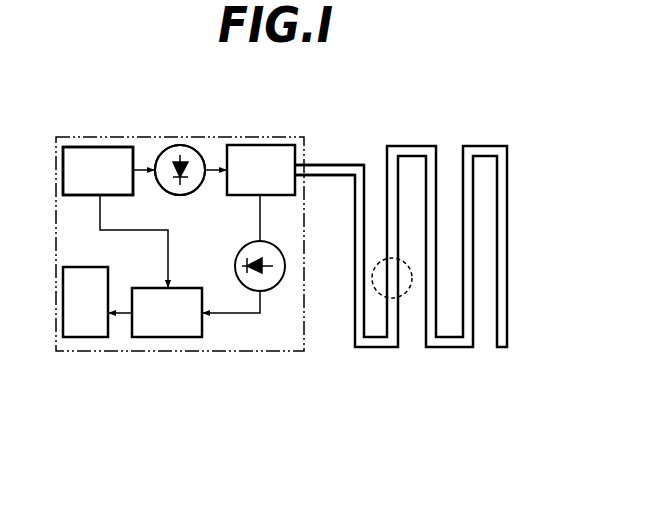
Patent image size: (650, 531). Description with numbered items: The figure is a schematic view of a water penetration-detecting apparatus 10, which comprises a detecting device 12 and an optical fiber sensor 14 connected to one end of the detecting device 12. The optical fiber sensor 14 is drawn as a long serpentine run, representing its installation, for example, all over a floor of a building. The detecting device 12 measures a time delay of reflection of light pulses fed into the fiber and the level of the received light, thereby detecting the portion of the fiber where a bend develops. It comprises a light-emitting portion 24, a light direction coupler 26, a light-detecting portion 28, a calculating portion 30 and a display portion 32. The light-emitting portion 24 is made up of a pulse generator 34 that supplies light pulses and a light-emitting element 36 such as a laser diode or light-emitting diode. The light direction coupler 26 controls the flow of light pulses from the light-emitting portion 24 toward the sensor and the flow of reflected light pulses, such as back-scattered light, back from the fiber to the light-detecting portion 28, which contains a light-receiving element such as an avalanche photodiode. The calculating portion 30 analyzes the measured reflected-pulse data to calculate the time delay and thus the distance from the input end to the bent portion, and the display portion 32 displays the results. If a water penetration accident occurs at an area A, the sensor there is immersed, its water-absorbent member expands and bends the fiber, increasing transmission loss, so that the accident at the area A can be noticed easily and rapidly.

The water penetration-detecting apparatus 10 is at (307, 331).
The detecting device 12 is at (263, 133).
The optical fiber sensor 14 is at (491, 141).
The light-emitting portion 24 is at (203, 90).
The light direction coupler 26 is at (296, 152).
The light-detecting portion 28 is at (278, 285).
The calculating portion 30 is at (175, 337).
The display portion 32 is at (80, 337).
The pulse generator 34 is at (127, 147).
The light-emitting element 36 is at (180, 145).
The area A is at (402, 297).